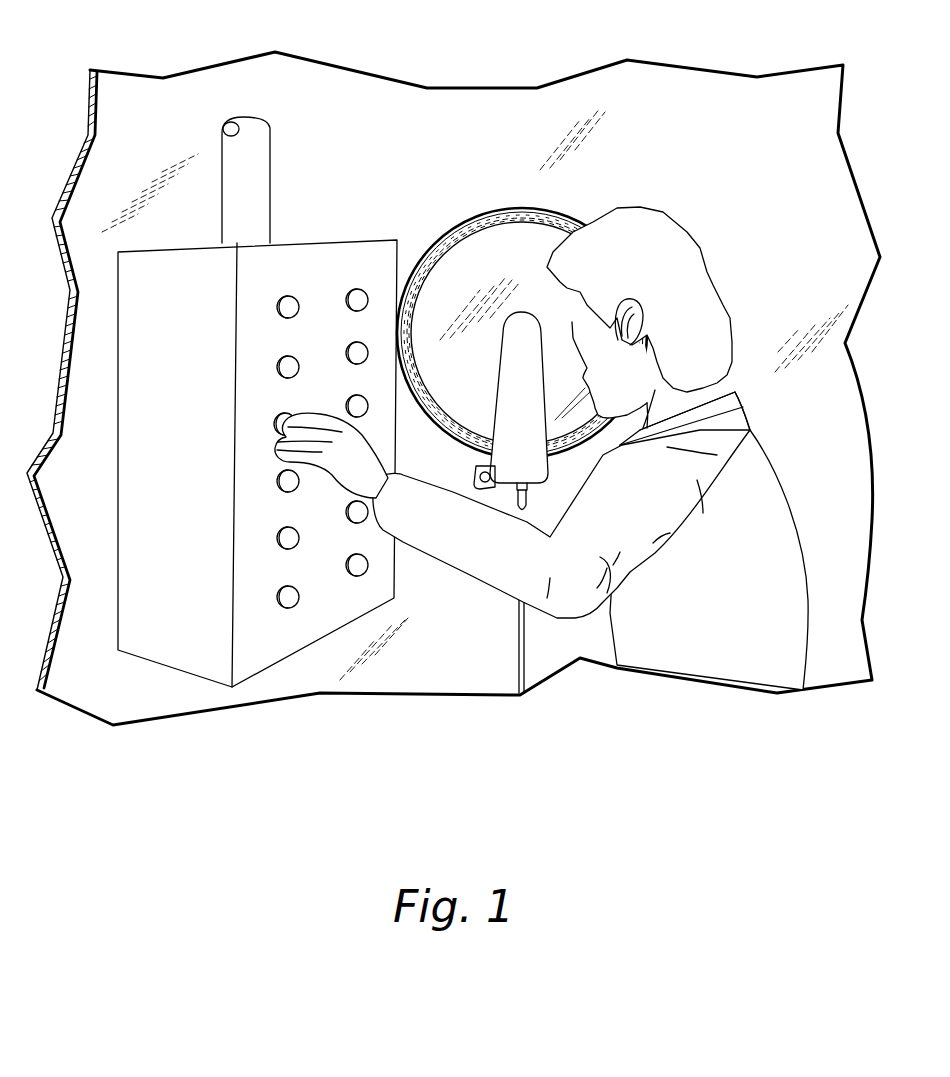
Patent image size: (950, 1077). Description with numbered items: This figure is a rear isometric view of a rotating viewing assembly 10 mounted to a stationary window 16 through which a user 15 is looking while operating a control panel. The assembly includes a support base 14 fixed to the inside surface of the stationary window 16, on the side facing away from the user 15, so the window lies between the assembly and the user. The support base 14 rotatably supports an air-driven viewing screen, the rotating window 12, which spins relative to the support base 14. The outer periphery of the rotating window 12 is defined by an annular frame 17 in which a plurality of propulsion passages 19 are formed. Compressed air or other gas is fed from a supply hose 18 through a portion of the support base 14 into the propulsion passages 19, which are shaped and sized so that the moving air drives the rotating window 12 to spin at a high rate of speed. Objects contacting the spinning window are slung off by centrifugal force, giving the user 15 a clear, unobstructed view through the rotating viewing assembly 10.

The rotating viewing assembly 10 is at (509, 290).
The rotating window 12 is at (518, 244).
The support base 14 is at (462, 224).
The user 15 is at (753, 463).
The stationary window 16 is at (428, 105).
The annular frame 17 is at (478, 212).
The supply hose 18 is at (517, 513).
The propulsion passages 19 is at (555, 210).